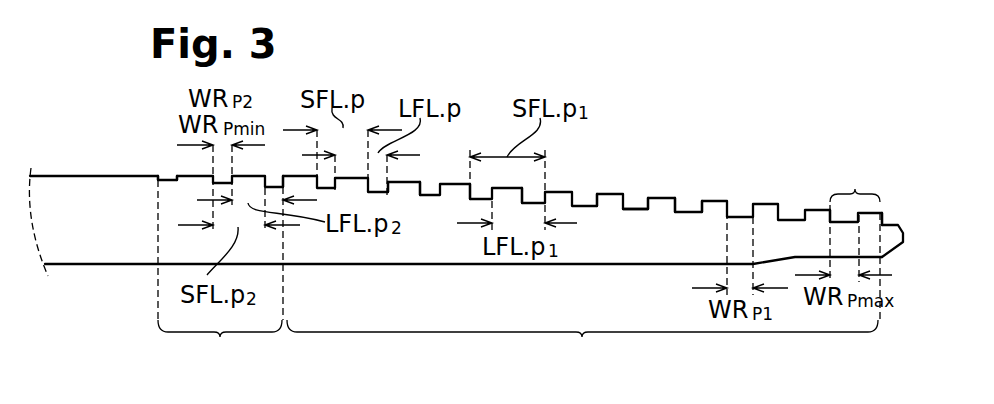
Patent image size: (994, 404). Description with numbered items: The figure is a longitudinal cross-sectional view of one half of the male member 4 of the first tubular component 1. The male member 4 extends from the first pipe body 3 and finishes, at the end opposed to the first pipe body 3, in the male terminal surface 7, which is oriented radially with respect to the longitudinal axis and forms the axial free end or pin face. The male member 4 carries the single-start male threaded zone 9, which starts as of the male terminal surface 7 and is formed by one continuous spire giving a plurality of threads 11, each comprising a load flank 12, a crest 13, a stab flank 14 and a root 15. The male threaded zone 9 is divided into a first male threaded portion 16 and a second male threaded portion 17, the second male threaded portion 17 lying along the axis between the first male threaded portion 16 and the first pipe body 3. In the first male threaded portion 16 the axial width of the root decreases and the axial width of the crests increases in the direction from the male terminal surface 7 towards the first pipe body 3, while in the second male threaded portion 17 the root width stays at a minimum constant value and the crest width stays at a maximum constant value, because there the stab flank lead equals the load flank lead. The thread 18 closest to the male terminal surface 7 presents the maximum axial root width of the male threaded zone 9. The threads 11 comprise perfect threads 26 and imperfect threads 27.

The first tubular component 1 is at (336, 287).
The first pipe body 3 is at (100, 237).
The male member 4 is at (597, 235).
The male terminal surface 7 is at (900, 238).
The male threaded zone 9 is at (507, 187).
The threads 11 is at (407, 179).
The load flank 12 is at (640, 205).
The crest 13 is at (661, 197).
The stab flank 14 is at (683, 205).
The root 15 is at (632, 212).
The first male threaded portion 16 is at (581, 272).
The second male threaded portion 17 is at (220, 272).
The thread closest to the male terminal surface 18 is at (856, 195).
The perfect threads 26 is at (457, 190).
The imperfect threads 27 is at (167, 182).